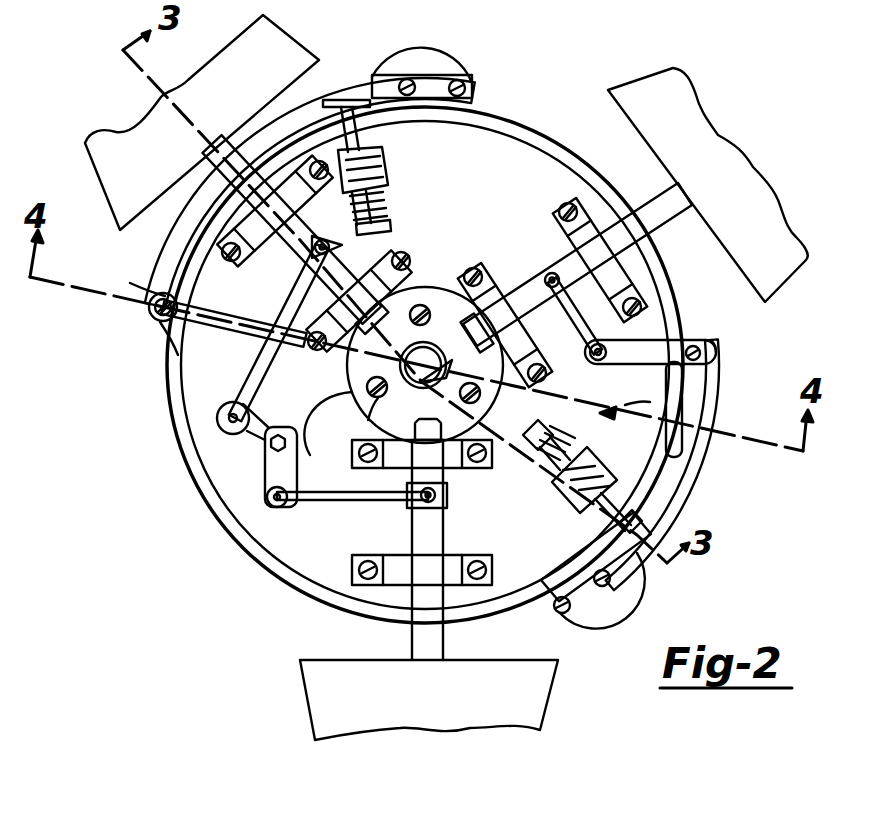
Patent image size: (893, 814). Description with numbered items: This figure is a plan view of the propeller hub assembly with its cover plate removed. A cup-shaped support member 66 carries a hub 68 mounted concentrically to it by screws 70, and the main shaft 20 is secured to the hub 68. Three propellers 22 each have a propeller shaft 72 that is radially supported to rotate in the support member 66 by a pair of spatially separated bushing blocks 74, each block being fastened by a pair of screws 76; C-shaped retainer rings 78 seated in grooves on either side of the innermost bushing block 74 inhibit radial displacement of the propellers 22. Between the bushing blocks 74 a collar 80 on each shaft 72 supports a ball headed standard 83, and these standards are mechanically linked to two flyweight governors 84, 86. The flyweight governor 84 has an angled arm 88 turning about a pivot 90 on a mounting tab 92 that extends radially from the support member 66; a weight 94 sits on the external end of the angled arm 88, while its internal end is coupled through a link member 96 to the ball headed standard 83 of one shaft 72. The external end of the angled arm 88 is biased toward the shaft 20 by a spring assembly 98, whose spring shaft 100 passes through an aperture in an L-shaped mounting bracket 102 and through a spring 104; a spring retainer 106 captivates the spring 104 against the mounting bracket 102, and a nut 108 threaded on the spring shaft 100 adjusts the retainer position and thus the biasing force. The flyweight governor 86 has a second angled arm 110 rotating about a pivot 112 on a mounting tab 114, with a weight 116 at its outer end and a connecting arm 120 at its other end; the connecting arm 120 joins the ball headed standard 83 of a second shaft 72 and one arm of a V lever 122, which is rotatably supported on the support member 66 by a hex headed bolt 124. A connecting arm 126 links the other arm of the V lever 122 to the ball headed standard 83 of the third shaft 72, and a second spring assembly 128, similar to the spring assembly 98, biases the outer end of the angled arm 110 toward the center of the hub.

The shaft 20 is at (372, 410).
The propellers 22 is at (165, 97).
The support member 66 is at (175, 425).
The hub 68 is at (328, 433).
The screws 70 is at (424, 303).
The propeller shaft 72 is at (155, 238).
The bushing blocks 74 is at (257, 250).
The screws 76 is at (367, 462).
The retainer rings 78 is at (512, 293).
The collar 80 is at (347, 222).
The ball headed standard 83 is at (330, 253).
The flyweight governor 84 is at (705, 502).
The flyweight governor 86 is at (380, 46).
The angled arm 88 is at (704, 420).
The pivot 90 is at (718, 352).
The mounting tab 92 is at (693, 328).
The weight 94 is at (633, 582).
The link member 96 is at (560, 318).
The spring assembly 98 is at (690, 408).
The spring shaft 100 is at (613, 523).
The mounting bracket 102 is at (615, 462).
The spring 104 is at (597, 403).
The spring retainer 106 is at (543, 467).
The nut 108 is at (463, 400).
The angled arm 110 is at (130, 283).
The pivot 112 is at (149, 306).
The mounting tab 114 is at (155, 335).
The weight 116 is at (433, 50).
The connecting arm 120 is at (290, 307).
The V lever 122 is at (267, 473).
The hex headed bolt 124 is at (280, 430).
The connecting arm 126 is at (320, 500).
The spring assembly 128 is at (400, 162).